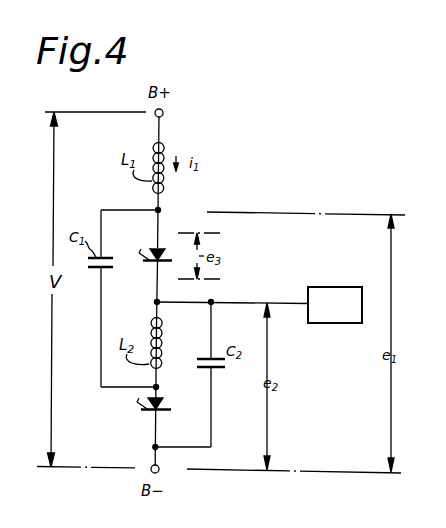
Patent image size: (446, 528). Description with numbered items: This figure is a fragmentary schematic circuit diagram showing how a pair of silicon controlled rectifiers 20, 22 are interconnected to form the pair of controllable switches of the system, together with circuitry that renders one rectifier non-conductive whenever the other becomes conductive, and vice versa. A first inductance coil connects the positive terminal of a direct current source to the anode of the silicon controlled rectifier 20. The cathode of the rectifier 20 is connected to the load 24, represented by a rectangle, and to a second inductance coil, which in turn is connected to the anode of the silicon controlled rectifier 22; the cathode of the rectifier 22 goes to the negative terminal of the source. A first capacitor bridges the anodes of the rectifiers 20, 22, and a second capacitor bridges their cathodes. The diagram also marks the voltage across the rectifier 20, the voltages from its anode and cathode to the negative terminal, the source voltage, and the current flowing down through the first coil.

The silicon controlled rectifier 20 is at (144, 262).
The silicon controlled rectifier 22 is at (143, 413).
The load 24 is at (328, 315).